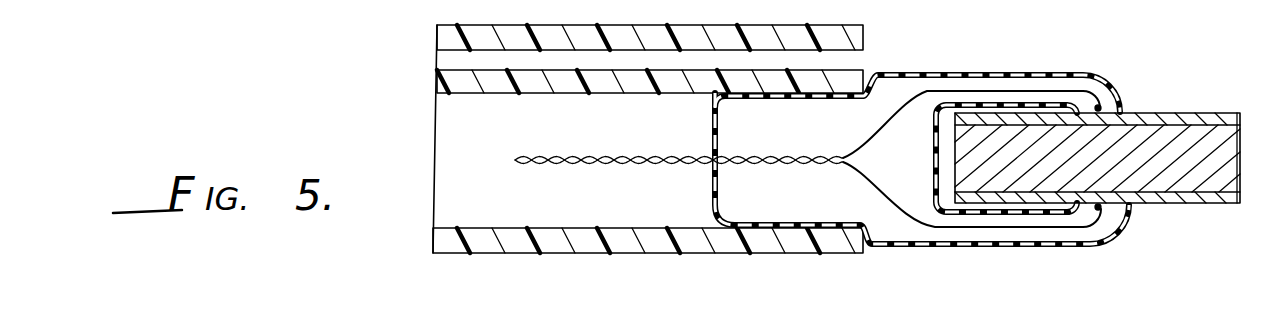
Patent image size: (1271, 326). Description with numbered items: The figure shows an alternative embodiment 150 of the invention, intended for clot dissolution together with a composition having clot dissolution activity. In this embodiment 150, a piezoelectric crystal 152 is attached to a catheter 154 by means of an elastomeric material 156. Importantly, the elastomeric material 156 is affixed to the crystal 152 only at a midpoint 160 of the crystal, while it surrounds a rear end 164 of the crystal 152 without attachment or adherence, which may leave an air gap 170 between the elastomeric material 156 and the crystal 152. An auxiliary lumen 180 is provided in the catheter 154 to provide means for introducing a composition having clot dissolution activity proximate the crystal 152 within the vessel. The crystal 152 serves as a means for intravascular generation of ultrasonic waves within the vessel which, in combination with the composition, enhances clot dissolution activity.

The alternative embodiment 150 is at (963, 24).
The piezoelectric crystal 152 is at (1181, 188).
The catheter 154 is at (600, 249).
The elastomeric material 156 is at (937, 72).
The midpoint 160 is at (1115, 108).
The rear end 164 is at (962, 166).
The air gap 170 is at (605, 157).
The auxiliary lumen 180 is at (850, 60).